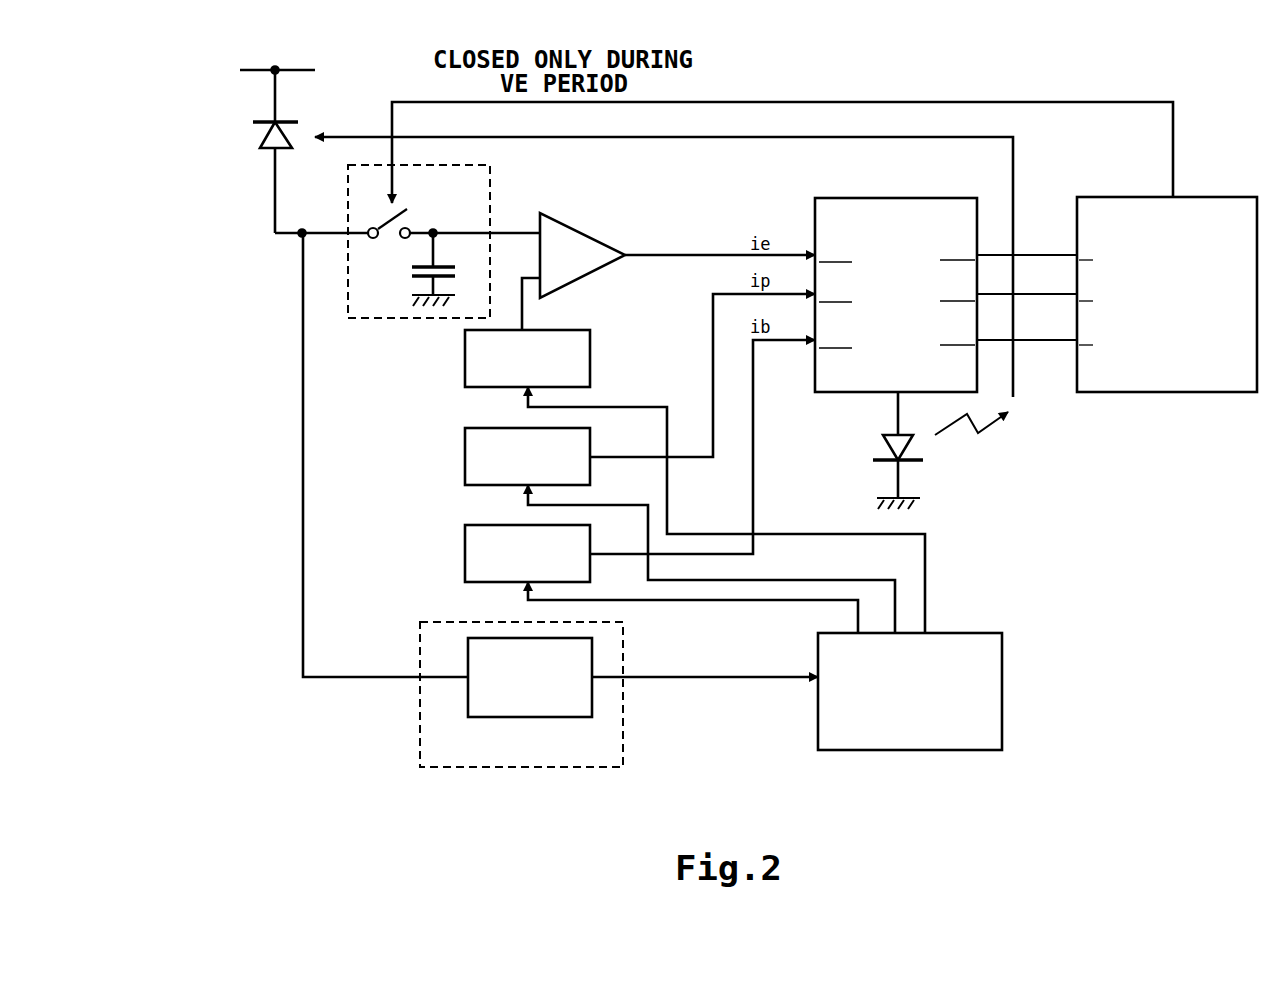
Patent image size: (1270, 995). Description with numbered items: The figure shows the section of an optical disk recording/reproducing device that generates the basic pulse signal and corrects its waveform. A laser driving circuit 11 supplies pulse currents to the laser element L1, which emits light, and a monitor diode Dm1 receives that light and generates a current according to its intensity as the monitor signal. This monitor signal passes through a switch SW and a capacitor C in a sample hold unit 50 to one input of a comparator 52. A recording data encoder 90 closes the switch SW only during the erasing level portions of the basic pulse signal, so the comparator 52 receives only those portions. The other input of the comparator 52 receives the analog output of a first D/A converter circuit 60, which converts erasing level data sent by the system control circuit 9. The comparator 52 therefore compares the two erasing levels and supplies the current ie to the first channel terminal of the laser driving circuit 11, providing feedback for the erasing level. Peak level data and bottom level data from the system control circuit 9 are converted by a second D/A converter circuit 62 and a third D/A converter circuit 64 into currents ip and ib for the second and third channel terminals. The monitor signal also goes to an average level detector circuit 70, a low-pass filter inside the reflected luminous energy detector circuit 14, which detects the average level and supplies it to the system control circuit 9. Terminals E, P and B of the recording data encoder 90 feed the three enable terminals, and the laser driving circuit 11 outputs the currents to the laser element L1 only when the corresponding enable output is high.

The system control circuit 9 is at (905, 751).
The laser driving circuit 11 is at (913, 198).
The reflected luminous energy detector circuit 14 is at (521, 723).
The sample hold unit 50 is at (442, 165).
The comparator 52 is at (575, 226).
The first digital-analog converter circuit 60 is at (478, 388).
The second digital-analog converter circuit 62 is at (478, 486).
The third digital-analog converter circuit 64 is at (478, 583).
The average level detector circuit 70 is at (527, 718).
The recording data encoder 90 is at (1193, 393).
The laser element L1 is at (935, 480).
The monitor diode Dm1 is at (252, 137).
The switch SW is at (413, 210).
The capacitor C is at (400, 267).